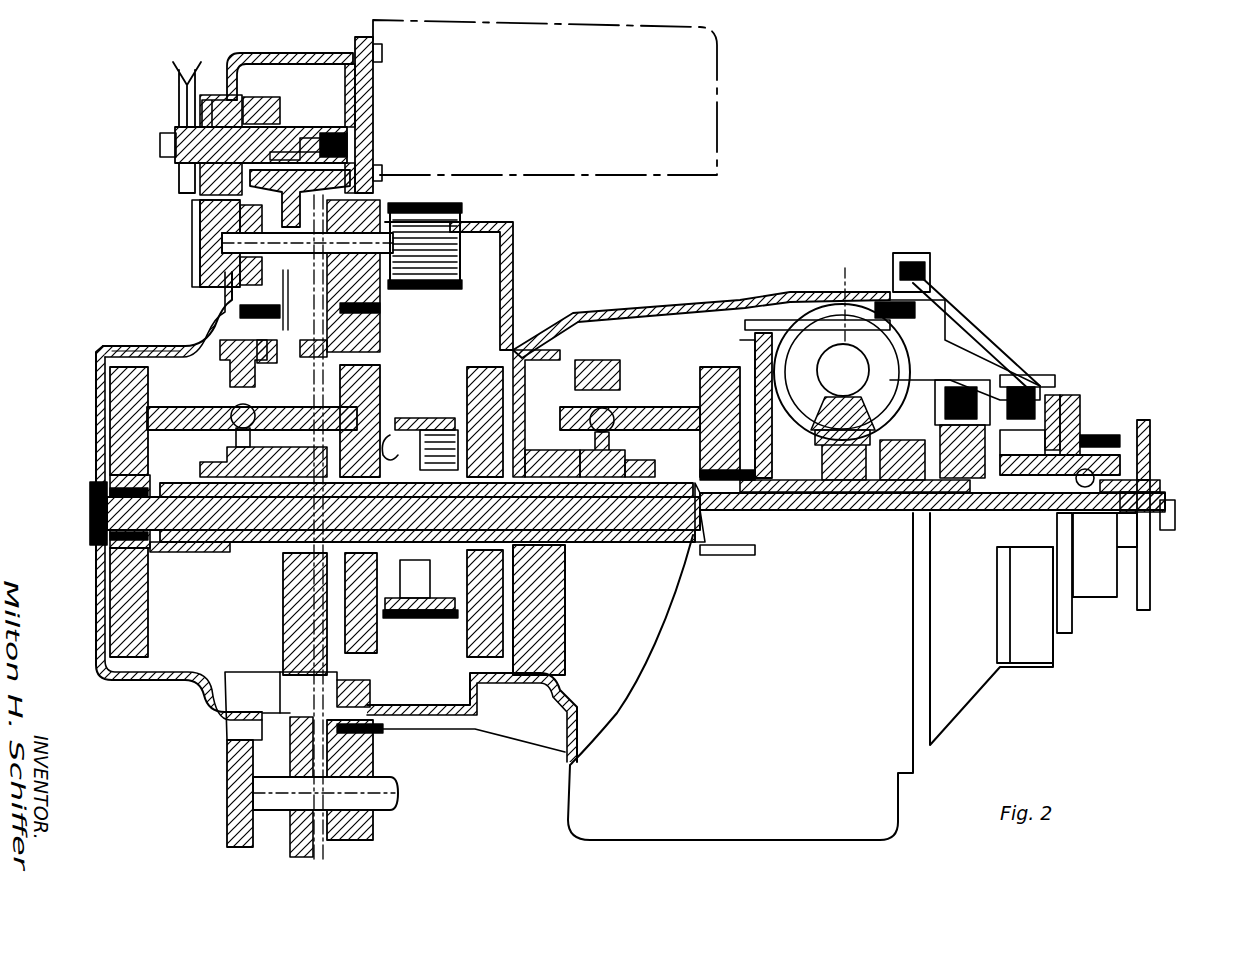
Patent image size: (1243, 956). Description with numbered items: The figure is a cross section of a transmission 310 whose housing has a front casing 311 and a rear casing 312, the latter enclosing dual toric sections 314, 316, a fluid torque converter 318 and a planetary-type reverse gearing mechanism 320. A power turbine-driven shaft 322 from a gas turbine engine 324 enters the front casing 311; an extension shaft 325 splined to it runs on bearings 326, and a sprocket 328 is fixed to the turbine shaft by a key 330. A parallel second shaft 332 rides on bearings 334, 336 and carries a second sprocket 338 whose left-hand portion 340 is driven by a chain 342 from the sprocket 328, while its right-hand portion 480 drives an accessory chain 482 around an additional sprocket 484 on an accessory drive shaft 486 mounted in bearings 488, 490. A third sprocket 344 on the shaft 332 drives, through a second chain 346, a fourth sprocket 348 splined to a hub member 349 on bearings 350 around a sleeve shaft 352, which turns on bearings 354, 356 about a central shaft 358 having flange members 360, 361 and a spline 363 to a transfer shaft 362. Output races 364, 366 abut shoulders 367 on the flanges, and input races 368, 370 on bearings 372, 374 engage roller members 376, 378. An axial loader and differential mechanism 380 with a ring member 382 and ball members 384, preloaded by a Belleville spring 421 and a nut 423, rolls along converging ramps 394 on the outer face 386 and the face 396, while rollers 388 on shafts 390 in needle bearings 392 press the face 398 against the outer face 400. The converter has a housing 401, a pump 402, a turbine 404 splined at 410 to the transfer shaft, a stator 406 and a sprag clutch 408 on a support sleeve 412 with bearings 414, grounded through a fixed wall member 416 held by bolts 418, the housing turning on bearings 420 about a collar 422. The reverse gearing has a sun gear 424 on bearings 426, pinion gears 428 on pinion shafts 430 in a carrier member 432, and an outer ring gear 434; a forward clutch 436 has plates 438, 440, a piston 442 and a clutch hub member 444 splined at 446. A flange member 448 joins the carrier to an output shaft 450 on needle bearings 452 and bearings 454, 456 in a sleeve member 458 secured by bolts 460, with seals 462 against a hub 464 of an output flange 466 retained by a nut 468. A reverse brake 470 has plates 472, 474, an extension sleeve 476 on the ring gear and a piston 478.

The transmission 310 is at (130, 125).
The front casing 311 is at (105, 395).
The rear casing 312 is at (615, 310).
The toric section 314 is at (170, 365).
The toric section 316 is at (665, 325).
The fluid torque converter 318 is at (935, 325).
The planetary-type reverse gearing mechanism 320 is at (1030, 438).
The power turbine-driven shaft 322 is at (347, 145).
The gas turbine engine 324 is at (705, 133).
The extension shaft 325 is at (372, 115).
The bearings 326 is at (245, 100).
The sprocket 328 is at (275, 100).
The key 330 is at (253, 127).
The second shaft 332 is at (235, 240).
The bearings 334 is at (240, 268).
The bearings 336 is at (353, 185).
The second sprocket 338 is at (205, 218).
The left-hand portion 340 is at (222, 313).
The chain 342 is at (240, 290).
The third sprocket 344 is at (432, 205).
The second chain 346 is at (445, 298).
The fourth sprocket 348 is at (402, 618).
The hub member 349 is at (440, 600).
The bearings 350 is at (455, 512).
The sleeve shaft 352 is at (318, 555).
The bearings 354 is at (175, 553).
The bearings 356 is at (665, 548).
The central shaft 358 is at (595, 548).
The flange member 360 is at (92, 495).
The flange member 361 is at (715, 468).
The transfer shaft 362 is at (782, 510).
The spline 363 is at (705, 510).
The output race 364 is at (115, 395).
The output race 366 is at (705, 395).
The shoulders 367 is at (115, 478).
The input race 368 is at (460, 375).
The input race 370 is at (503, 380).
The bearings 372 is at (426, 499).
The bearings 374 is at (427, 520).
The roller member 376 is at (165, 430).
The roller member 378 is at (700, 420).
The axial loader and differential mechanism 380 is at (345, 440).
The ring member 382 is at (393, 509).
The ball members 384 is at (350, 480).
The outer face 386 is at (382, 395).
The rollers 388 is at (500, 445).
The shafts 390 is at (503, 468).
The needle bearings 392 is at (432, 418).
The converging ramps 394 is at (395, 430).
The face 396 is at (355, 509).
The face 398 is at (440, 509).
The outer face 400 is at (465, 365).
The converter housing 401 is at (845, 294).
The pump 402 is at (782, 345).
The turbine 404 is at (920, 300).
The stator 406 is at (843, 387).
The sprag clutch 408 is at (835, 495).
The spline 410 is at (865, 495).
The support sleeve 412 is at (750, 500).
The bearings 414 is at (760, 520).
The fixed wall member 416 is at (750, 365).
The bolts 418 is at (797, 310).
The bearings 420 is at (790, 390).
The Belleville spring 421 is at (105, 540).
The collar 422 is at (803, 510).
The nut 423 is at (105, 500).
The sun gear 424 is at (920, 515).
The bearings 426 is at (995, 515).
The pinion gears 428 is at (950, 500).
The pinion shafts 430 is at (1015, 500).
The carrier member 432 is at (843, 438).
The outer ring gear 434 is at (1015, 385).
The forward clutch 436 is at (958, 385).
The discs or plates 438 is at (950, 395).
The discs or plates 440 is at (883, 375).
The piston 442 is at (883, 353).
The clutch hub member 444 is at (890, 498).
The spline 446 is at (905, 500).
The flange member 448 is at (980, 500).
The output shaft 450 is at (1090, 520).
The needle bearings 452 is at (1025, 515).
The bearings 454 is at (1060, 492).
The bearings 456 is at (1155, 512).
The sleeve member 458 is at (1095, 455).
The bolts 460 is at (1150, 430).
The seals 462 is at (1150, 455).
The hub 464 is at (1152, 495).
The output flange 466 is at (1143, 572).
The nut 468 is at (1150, 485).
The reverse brake 470 is at (1030, 388).
The discs or plates 472 is at (1010, 395).
The discs or plates 474 is at (1070, 405).
The extension sleeve 476 is at (1085, 432).
The piston 478 is at (1050, 400).
The right-hand portion 480 is at (303, 310).
The chain 482 is at (380, 302).
The additional sprocket 484 is at (315, 855).
The accessory drive shaft 486 is at (395, 795).
The bearings 488 is at (240, 840).
The bearings 490 is at (373, 745).